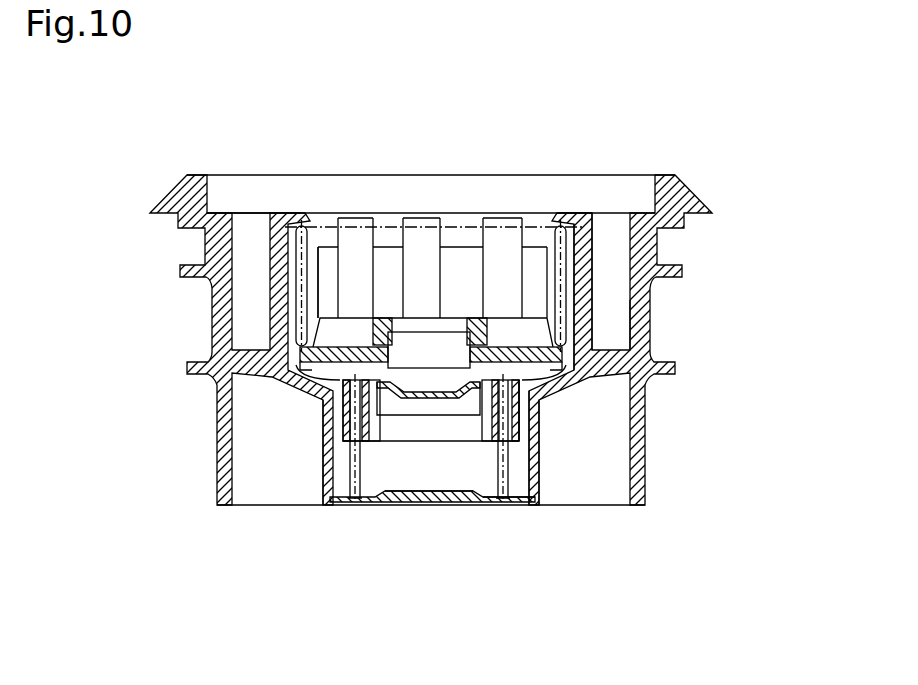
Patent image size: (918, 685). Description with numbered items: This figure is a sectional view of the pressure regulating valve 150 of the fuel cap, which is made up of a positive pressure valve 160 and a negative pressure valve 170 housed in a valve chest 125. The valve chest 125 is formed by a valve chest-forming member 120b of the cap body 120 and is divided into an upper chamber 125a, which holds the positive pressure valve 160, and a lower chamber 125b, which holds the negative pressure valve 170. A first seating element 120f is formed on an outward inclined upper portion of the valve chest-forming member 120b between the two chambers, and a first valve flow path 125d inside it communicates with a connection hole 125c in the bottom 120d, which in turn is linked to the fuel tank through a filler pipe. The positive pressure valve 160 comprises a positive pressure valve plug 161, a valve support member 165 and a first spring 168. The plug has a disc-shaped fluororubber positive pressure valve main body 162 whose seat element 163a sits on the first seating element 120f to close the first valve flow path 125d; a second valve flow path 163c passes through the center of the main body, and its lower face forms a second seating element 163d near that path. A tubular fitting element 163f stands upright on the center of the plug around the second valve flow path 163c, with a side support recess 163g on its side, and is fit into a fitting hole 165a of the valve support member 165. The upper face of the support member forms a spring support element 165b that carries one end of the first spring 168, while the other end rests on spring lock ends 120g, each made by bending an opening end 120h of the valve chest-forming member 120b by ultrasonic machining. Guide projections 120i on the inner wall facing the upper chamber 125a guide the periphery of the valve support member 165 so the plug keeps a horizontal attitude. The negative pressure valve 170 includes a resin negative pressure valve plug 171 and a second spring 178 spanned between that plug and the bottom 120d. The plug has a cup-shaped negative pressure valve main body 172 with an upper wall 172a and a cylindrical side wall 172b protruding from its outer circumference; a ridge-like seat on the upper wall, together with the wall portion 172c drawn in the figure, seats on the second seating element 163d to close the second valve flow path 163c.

The cap body 120 is at (478, 359).
The valve chest-forming member 120b is at (588, 328).
The bottom 120d is at (460, 492).
The first seating element 120f is at (542, 385).
The spring lock ends 120g is at (578, 216).
The opening end 120h is at (585, 238).
The guide projections 120i is at (590, 265).
The valve chest 125 is at (105, 283).
The upper chamber 125a is at (318, 305).
The lower chamber 125b is at (337, 410).
The connection hole 125c is at (450, 493).
The first valve flow path 125d is at (538, 405).
The pressure regulating valve 150 is at (350, 579).
The positive pressure valve 160 is at (345, 400).
The positive pressure valve plug 161 is at (457, 229).
The positive pressure valve main body 162 is at (457, 335).
The seat element 163a is at (583, 345).
The second valve flow path 163c is at (478, 345).
The second seating element 163d is at (414, 340).
The tubular fitting element 163f is at (404, 385).
The side support recess 163g is at (368, 340).
The valve support member 165 is at (650, 101).
The fitting hole 165a is at (528, 340).
The spring support element 165b is at (556, 232).
The first spring 168 is at (263, 212).
The negative pressure valve 170 is at (366, 483).
The negative pressure valve plug 171 is at (655, 569).
The negative pressure valve main body 172 is at (569, 496).
The upper wall 172a is at (496, 440).
The cylindrical side wall 172b is at (521, 427).
The guide pin 172c is at (507, 418).
The second spring 178 is at (388, 505).